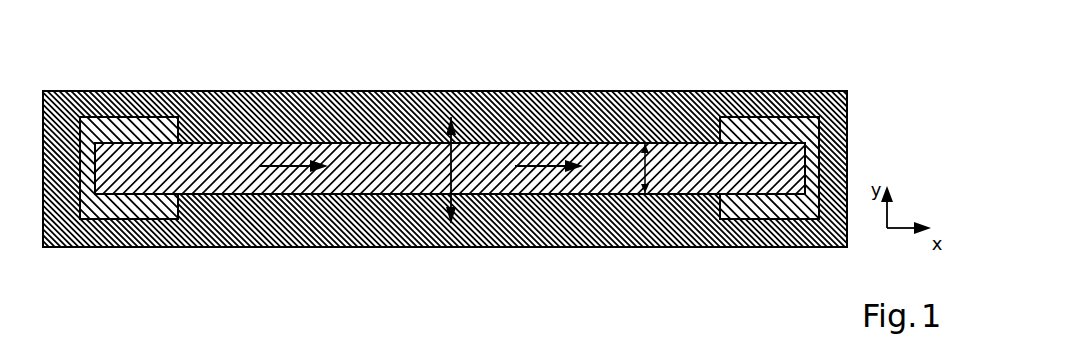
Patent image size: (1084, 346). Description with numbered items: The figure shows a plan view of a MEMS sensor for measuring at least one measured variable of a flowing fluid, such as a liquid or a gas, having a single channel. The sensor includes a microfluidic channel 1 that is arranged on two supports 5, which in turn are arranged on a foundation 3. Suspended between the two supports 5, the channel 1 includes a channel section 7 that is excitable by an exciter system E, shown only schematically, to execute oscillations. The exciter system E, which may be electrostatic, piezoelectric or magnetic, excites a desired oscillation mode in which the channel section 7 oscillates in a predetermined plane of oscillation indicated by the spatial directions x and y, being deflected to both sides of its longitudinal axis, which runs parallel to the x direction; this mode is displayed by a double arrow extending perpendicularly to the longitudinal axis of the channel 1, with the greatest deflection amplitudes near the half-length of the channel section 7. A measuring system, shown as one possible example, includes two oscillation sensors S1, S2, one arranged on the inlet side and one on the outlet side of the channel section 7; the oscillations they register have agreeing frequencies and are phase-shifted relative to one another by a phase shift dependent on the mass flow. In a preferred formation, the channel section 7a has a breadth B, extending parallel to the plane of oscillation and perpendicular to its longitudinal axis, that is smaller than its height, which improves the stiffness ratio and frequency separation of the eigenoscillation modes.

The microfluidic channel 1 is at (253, 112).
The foundation 3 is at (338, 230).
The supports 5 is at (132, 132).
The channel section 7 is at (450, 173).
The channel section 7a is at (435, 168).
The exciter system E is at (451, 158).
The breadth B is at (639, 168).
The oscillation sensor S1 is at (215, 219).
The oscillation sensor S2 is at (684, 219).